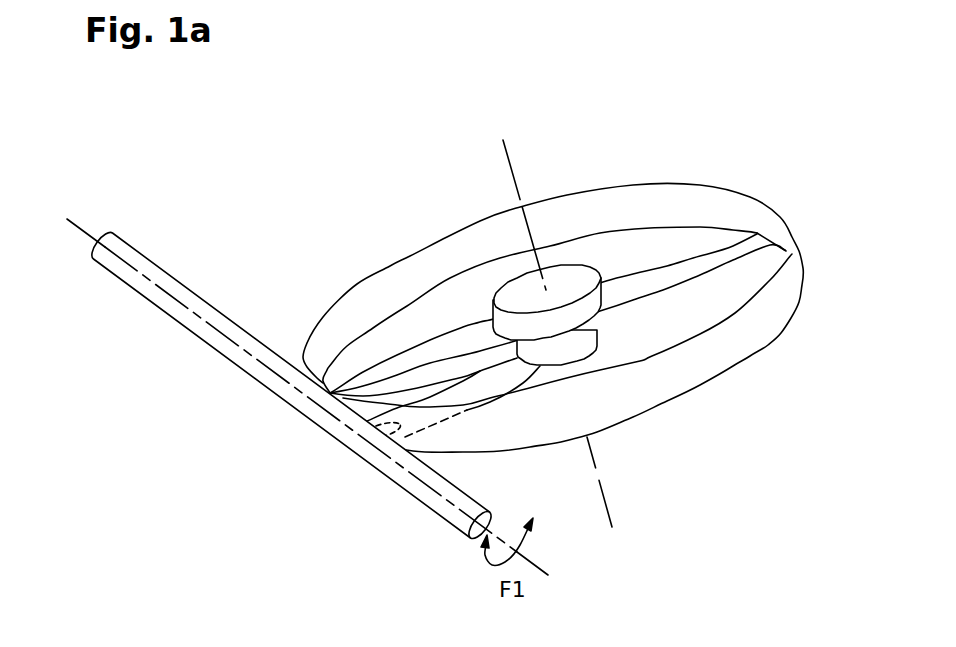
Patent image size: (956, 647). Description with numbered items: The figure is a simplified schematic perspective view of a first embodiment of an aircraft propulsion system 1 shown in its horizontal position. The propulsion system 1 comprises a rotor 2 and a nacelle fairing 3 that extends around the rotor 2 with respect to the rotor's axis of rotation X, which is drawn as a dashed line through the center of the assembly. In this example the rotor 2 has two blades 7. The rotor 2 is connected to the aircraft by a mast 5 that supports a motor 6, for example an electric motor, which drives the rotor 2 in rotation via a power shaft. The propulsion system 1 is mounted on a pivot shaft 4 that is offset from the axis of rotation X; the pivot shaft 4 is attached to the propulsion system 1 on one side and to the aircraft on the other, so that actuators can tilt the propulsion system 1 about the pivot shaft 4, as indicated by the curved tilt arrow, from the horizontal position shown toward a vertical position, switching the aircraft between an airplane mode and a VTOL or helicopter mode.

The propulsion system 1 is at (553, 300).
The rotor 2 is at (598, 255).
The nacelle fairing 3 is at (757, 312).
The pivot shaft 4 is at (138, 288).
The mast 5 is at (498, 378).
The motor 6 is at (587, 333).
The blades 7 is at (400, 372).